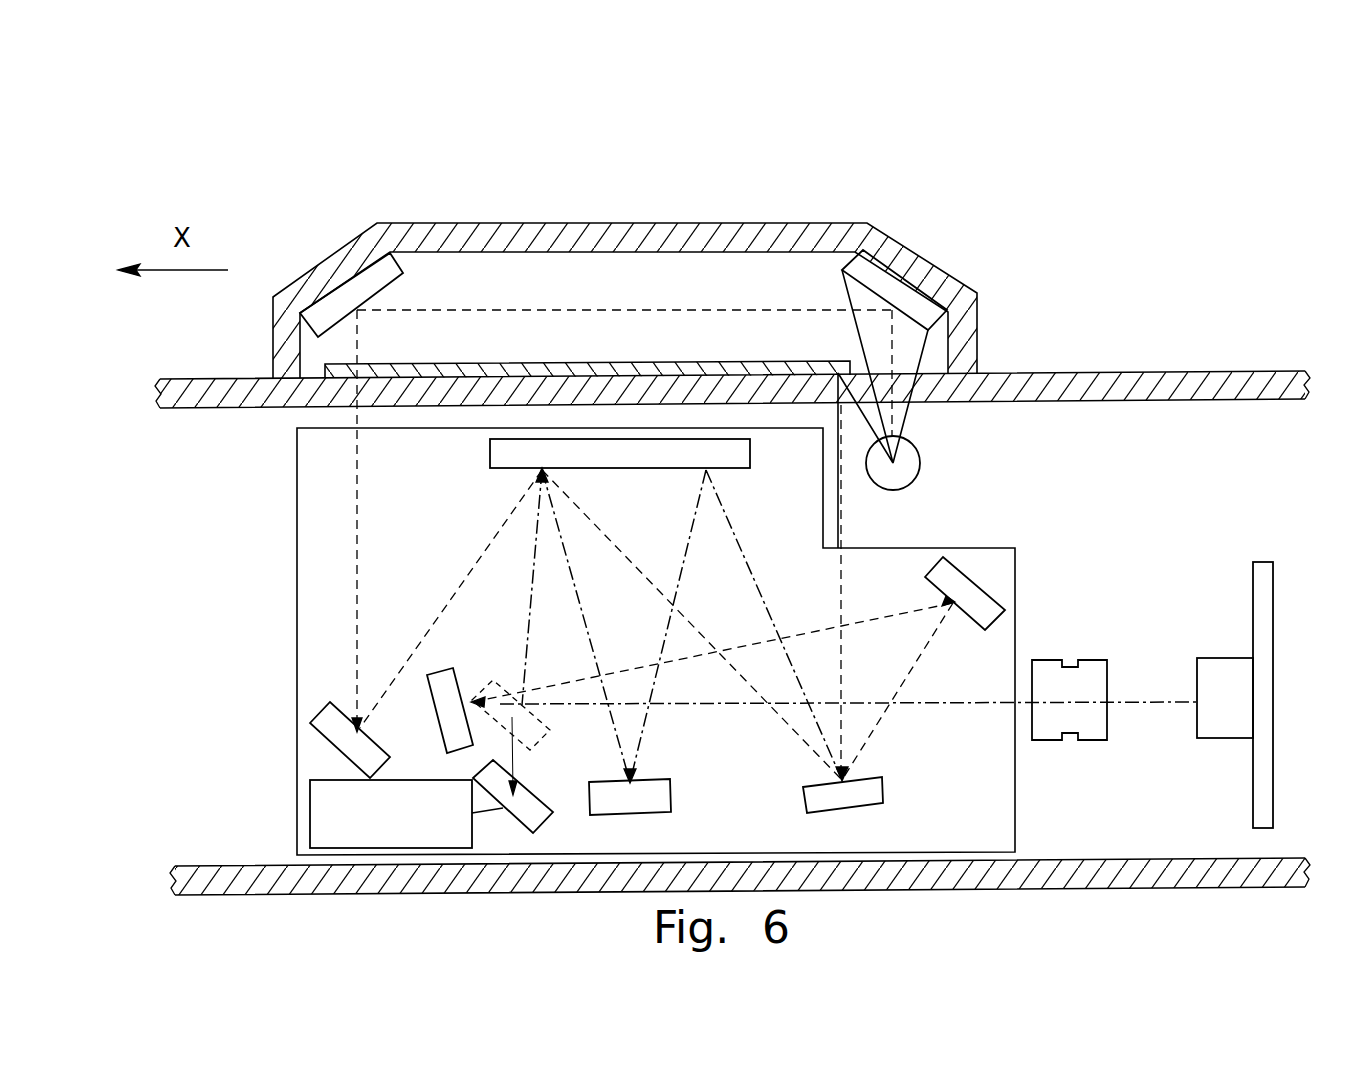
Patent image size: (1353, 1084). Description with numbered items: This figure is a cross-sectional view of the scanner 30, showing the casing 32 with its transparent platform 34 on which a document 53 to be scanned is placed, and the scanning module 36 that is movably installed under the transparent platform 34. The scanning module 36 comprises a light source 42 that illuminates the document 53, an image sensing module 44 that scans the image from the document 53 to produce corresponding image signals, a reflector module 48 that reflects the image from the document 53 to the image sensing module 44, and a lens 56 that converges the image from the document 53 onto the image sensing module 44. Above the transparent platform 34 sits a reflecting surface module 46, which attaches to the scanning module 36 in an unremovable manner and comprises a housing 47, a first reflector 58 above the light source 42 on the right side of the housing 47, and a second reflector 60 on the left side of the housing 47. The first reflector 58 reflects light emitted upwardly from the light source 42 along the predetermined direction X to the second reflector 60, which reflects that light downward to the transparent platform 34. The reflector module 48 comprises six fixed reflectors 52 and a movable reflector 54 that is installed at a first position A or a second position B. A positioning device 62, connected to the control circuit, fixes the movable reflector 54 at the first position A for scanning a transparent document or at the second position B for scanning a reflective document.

The scanner 30 is at (1138, 198).
The casing 32 is at (1087, 870).
The transparent platform 34 is at (1085, 376).
The scanning module 36 is at (1222, 484).
The light source 42 is at (915, 468).
The image sensing module 44 is at (1235, 695).
The reflecting surface module 46 is at (725, 155).
The housing 47 is at (623, 223).
The reflector module 48 is at (297, 482).
The fixed reflectors 52 is at (490, 455).
The document 53 is at (653, 368).
The movable reflector 54 is at (490, 770).
The lens 56 is at (1090, 678).
The first reflector 58 is at (903, 290).
The second reflector 60 is at (343, 298).
The positioning device 62 is at (310, 810).